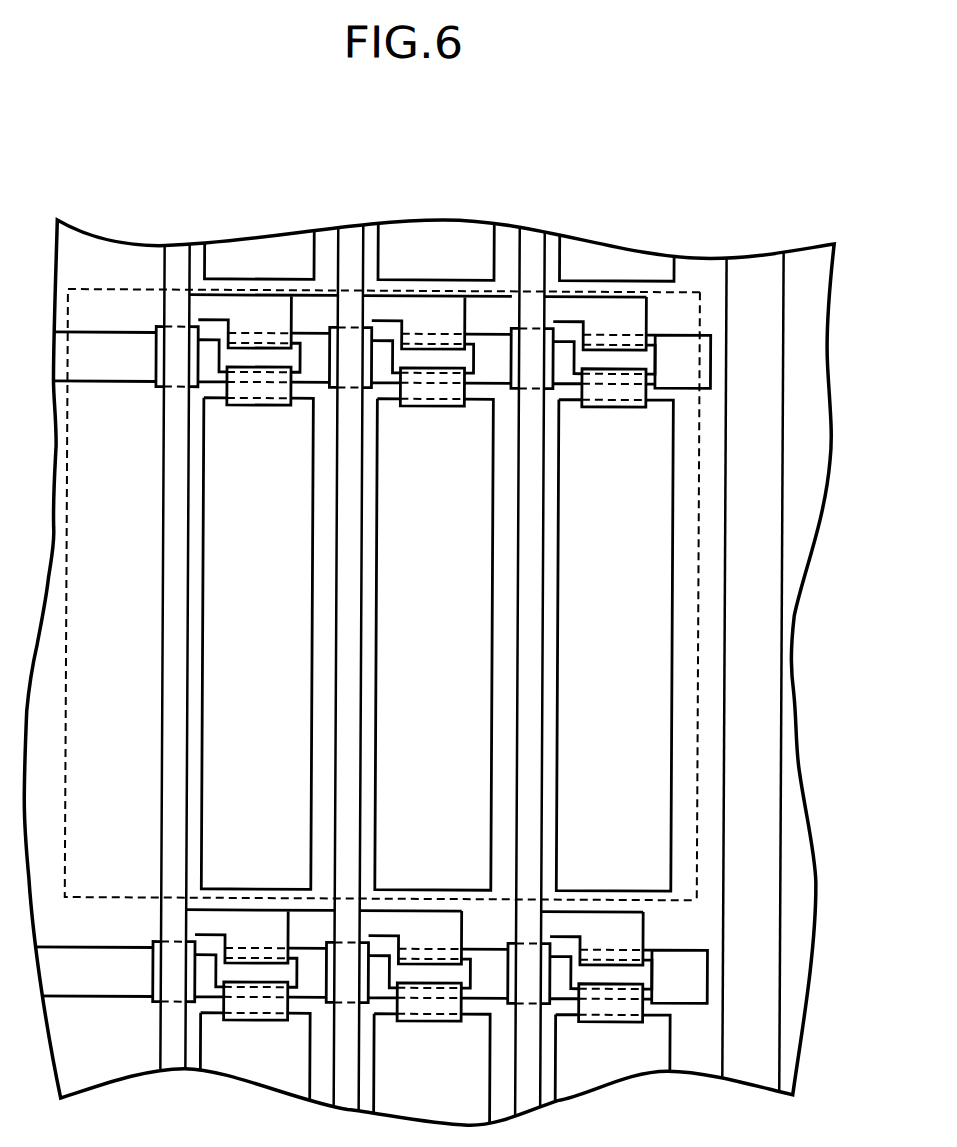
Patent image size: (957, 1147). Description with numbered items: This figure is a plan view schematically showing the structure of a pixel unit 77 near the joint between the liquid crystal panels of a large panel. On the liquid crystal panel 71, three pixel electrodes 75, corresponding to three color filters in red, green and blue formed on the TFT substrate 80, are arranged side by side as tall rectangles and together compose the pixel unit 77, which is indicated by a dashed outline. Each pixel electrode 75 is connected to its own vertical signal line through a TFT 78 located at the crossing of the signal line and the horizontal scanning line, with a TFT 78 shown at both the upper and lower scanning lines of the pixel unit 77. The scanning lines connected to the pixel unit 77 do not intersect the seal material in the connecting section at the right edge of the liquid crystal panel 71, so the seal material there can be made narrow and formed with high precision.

The liquid crystal panel 71 is at (832, 242).
The pixel electrode 75 is at (485, 855).
The pixel unit 77 is at (79, 291).
The TFT 78 is at (625, 977).
The TFT substrate 80 is at (697, 273).